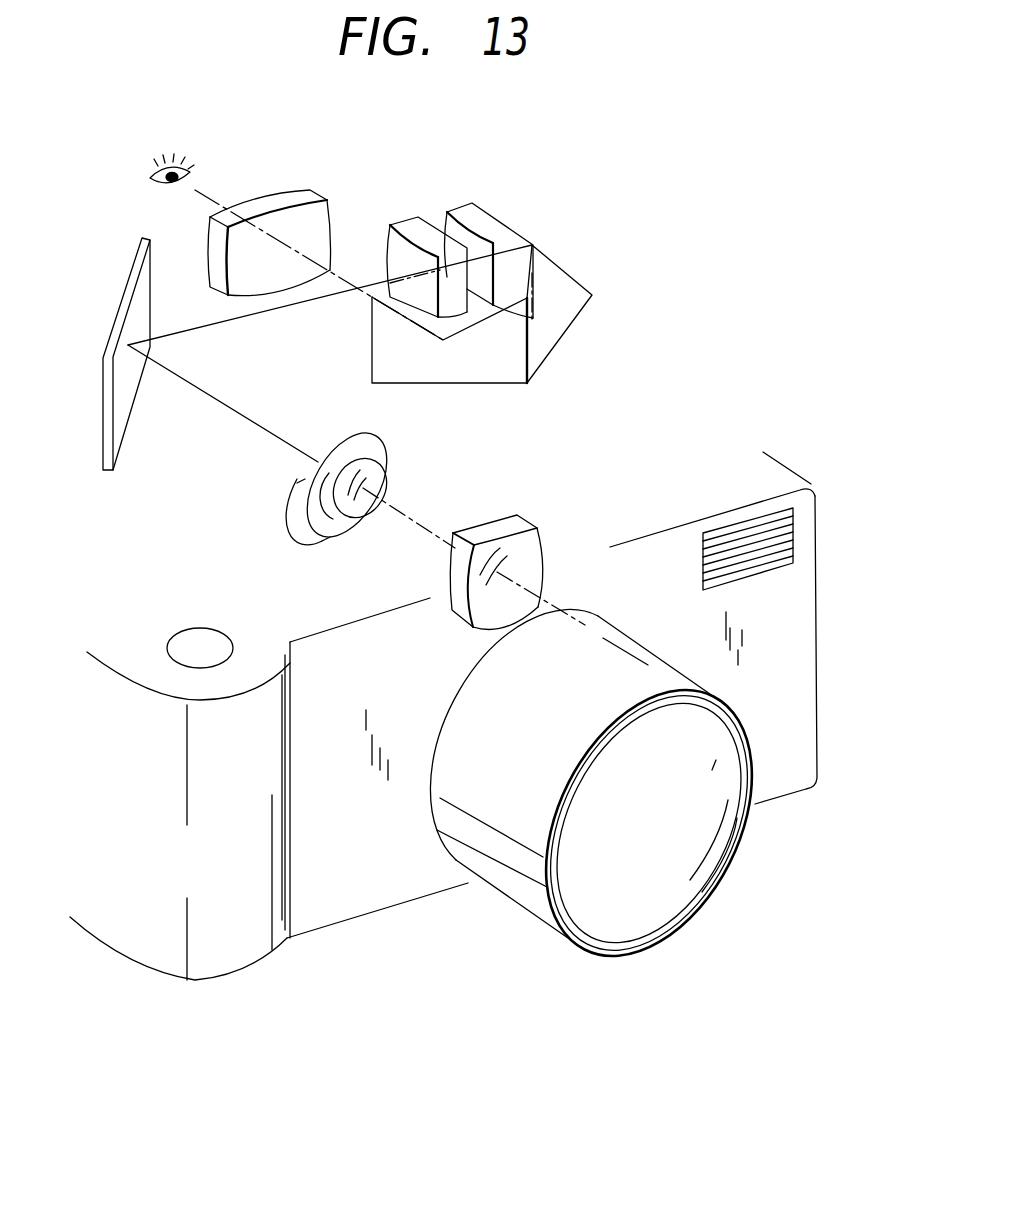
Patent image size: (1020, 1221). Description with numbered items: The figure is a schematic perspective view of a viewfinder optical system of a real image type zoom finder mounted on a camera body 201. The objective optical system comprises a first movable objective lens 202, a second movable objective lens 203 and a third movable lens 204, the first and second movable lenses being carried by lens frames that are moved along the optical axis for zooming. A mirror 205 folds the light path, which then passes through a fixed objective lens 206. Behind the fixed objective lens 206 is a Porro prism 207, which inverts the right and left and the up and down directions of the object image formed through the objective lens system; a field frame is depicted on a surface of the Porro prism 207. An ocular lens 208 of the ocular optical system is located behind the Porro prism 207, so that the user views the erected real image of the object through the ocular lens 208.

The camera body 201 is at (806, 623).
The first movable objective lens 202 is at (527, 528).
The second movable objective lens 203 is at (375, 473).
The third movable lens 204 is at (348, 455).
The mirror 205 is at (137, 372).
The fixed objective lens 206 is at (410, 227).
The Porro prism 207 is at (560, 287).
The ocular lens 208 is at (280, 198).